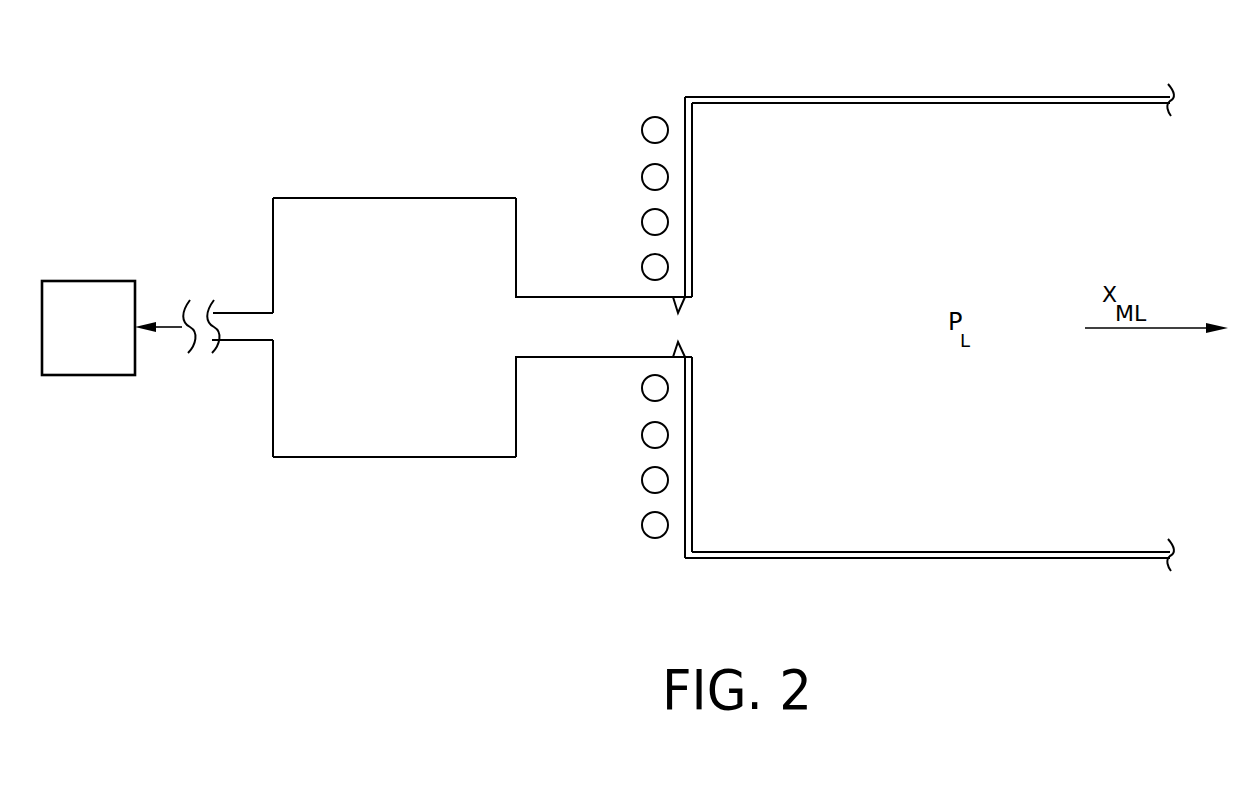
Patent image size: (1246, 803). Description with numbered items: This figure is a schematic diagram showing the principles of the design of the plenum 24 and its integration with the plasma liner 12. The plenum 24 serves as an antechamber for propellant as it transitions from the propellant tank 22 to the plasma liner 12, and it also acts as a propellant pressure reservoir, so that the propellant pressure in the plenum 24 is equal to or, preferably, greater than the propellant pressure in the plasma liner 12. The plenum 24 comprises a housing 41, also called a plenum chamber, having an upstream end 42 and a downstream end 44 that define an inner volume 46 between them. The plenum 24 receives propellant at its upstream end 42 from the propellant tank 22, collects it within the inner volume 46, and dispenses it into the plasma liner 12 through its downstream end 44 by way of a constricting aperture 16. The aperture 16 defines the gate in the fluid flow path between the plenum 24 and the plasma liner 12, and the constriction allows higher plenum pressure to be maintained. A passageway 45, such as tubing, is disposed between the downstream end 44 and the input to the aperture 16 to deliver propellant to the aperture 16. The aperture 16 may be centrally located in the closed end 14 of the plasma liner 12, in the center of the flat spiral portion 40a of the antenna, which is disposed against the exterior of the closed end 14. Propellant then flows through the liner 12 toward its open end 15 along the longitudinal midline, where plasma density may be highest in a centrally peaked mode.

The plasma liner 12 is at (893, 96).
The closed end 14 is at (685, 112).
The open end 15 is at (1155, 148).
The constricting aperture 16 is at (678, 329).
The propellant tank 22 is at (78, 280).
The plenum 24 is at (446, 269).
The flat spiral portion 40a is at (639, 113).
The housing 41 is at (375, 197).
The upstream end 42 is at (272, 218).
The downstream end 44 is at (519, 213).
The passageway 45 is at (585, 358).
The inner volume 46 is at (360, 403).